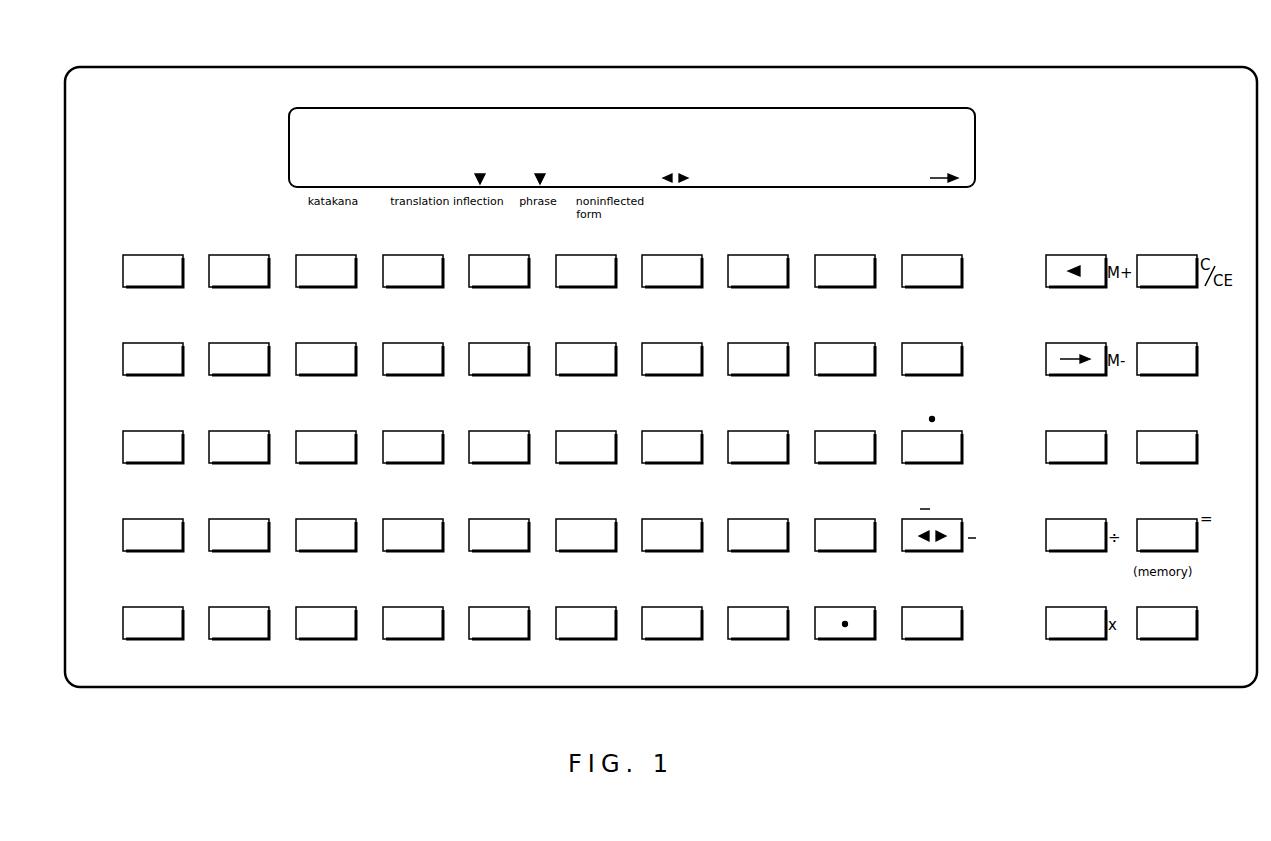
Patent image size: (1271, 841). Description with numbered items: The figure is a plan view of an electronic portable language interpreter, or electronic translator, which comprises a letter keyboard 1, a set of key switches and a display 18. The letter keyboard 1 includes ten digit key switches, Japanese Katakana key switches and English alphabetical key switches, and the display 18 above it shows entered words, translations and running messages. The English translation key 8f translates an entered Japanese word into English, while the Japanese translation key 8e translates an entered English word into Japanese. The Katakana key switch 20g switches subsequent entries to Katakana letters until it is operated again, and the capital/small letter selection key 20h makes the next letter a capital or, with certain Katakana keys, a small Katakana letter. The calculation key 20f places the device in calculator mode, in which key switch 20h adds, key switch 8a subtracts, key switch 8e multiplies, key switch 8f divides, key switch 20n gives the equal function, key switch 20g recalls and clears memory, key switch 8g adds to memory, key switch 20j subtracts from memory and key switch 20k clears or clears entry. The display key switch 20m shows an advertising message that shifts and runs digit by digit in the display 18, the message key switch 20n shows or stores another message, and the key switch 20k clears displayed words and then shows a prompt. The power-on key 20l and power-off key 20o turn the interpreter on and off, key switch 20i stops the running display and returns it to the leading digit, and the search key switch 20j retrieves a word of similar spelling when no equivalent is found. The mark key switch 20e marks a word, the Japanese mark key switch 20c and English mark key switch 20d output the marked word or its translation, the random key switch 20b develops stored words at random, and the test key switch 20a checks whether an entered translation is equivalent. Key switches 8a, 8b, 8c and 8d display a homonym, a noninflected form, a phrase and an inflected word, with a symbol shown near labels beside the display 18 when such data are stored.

The letter keyboard 1 is at (113, 341).
The display 18 is at (912, 122).
The test key switch 20a is at (176, 254).
The random key switch 20b is at (262, 254).
The Japanese mark key switch 20c is at (349, 254).
The English mark key switch 20d is at (436, 254).
The mark key switch 20e is at (522, 254).
The calculation key 20f is at (609, 254).
The inflected word key switch 8d is at (695, 254).
The phrase key switch 8c is at (781, 254).
The noninflected form key switch 8b is at (868, 254).
The Katakana key switch 20g is at (955, 254).
The memory add key switch 8g is at (1099, 254).
The clear key switch 20k is at (1190, 254).
The display stop key switch 20i is at (1099, 342).
The power-on key 20l is at (1190, 342).
The search key switch 20j is at (1099, 430).
The display key switch 20m is at (1190, 430).
The homonym key switch 8a is at (955, 518).
The English translation key 8f is at (1099, 518).
The message key switch 20n is at (1190, 518).
The capital/small letter selection key 20h is at (955, 606).
The Japanese translation key 8e is at (1099, 606).
The power-off key 20o is at (1190, 606).